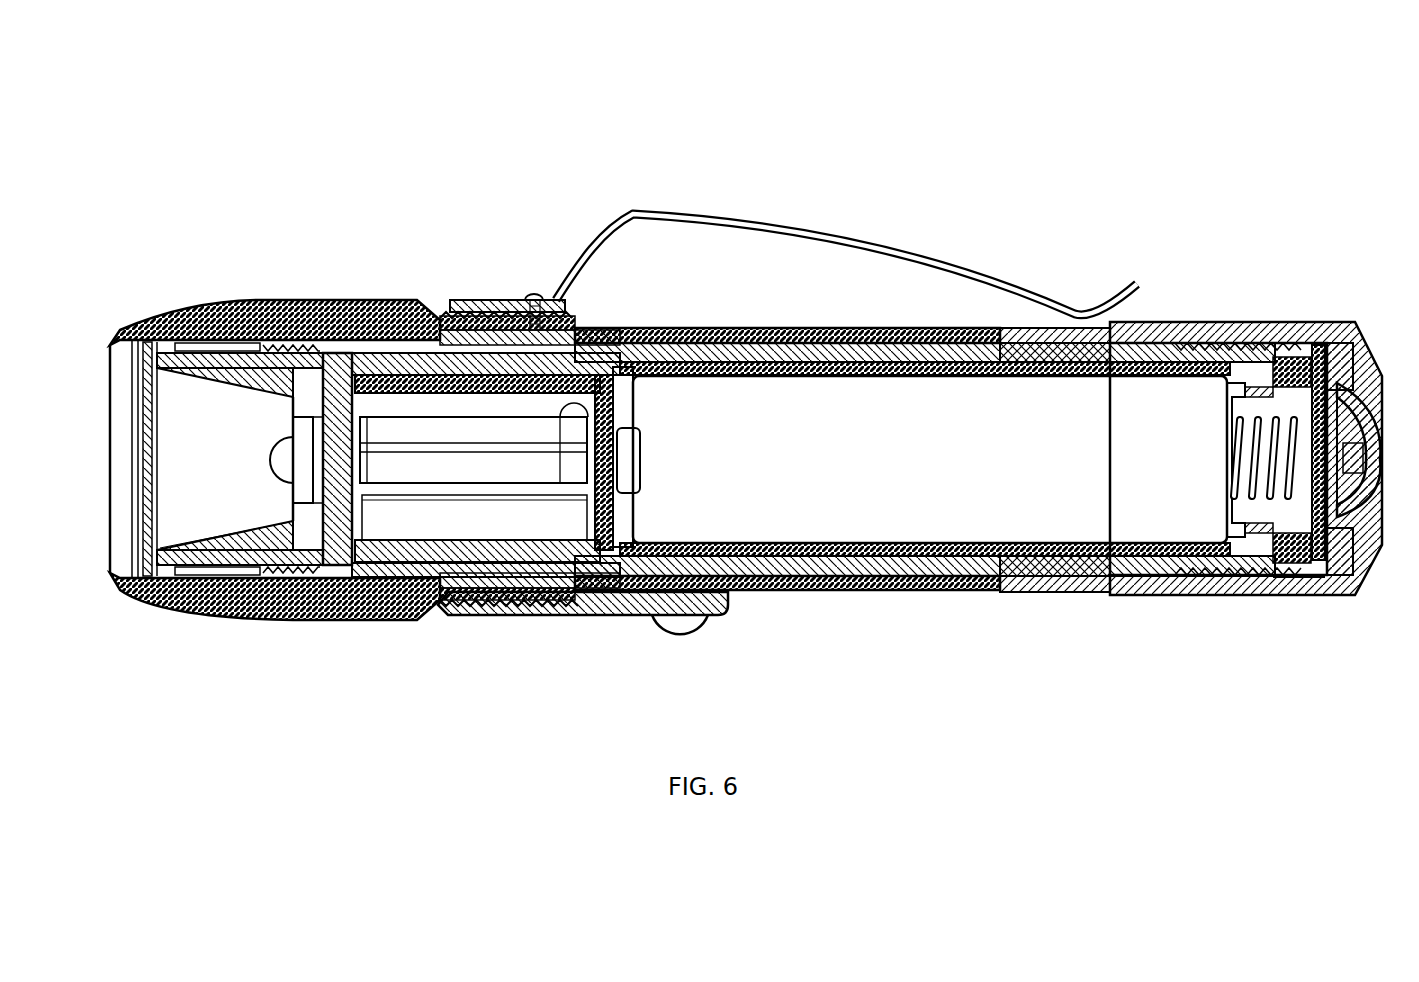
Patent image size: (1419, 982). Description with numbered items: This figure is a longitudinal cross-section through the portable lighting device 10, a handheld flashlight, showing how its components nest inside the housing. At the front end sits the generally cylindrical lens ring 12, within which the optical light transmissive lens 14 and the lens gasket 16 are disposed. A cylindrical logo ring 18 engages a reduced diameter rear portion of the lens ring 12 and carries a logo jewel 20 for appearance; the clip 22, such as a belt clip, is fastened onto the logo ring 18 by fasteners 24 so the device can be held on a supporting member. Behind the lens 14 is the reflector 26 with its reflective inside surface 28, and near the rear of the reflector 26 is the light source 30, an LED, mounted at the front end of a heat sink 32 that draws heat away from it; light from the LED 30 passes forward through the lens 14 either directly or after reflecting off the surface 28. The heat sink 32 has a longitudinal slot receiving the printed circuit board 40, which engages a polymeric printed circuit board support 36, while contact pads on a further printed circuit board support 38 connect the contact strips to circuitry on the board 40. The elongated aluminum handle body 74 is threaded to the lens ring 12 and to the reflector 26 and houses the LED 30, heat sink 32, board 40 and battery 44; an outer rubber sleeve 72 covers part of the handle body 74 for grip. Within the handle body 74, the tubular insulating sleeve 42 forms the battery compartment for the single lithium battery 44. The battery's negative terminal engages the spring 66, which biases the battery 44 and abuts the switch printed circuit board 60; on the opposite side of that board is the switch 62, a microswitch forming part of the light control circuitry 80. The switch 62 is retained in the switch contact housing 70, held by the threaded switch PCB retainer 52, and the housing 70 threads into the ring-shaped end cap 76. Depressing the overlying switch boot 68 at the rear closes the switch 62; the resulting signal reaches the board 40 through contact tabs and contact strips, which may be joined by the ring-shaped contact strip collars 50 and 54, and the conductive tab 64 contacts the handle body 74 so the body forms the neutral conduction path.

The portable lighting device 10 is at (232, 152).
The lens ring 12 is at (196, 307).
The optical light transmissive lens 14 is at (140, 415).
The lens gasket 16 is at (136, 560).
The logo ring 18 is at (497, 617).
The logo jewel 20 is at (678, 626).
The clip 22 is at (793, 227).
The fasteners 24 is at (533, 297).
The reflector 26 is at (249, 372).
The reflective inside surface 28 is at (222, 404).
The light source 30 is at (270, 477).
The heat sink 32 is at (313, 537).
The printed circuit board support 36 is at (412, 372).
The printed circuit board support 38 is at (632, 362).
The printed circuit board 40 is at (398, 492).
The insulating sleeve 42 is at (718, 330).
The battery 44 is at (832, 517).
The first contact strip collar 50 is at (1223, 583).
The switch PCB retainer 52 is at (1287, 365).
The second contact strip collar 54 is at (1263, 562).
The switch printed circuit board 60 is at (1365, 543).
The switch 62 is at (1330, 457).
The conductive tab 64 is at (1302, 345).
The spring 66 is at (1248, 410).
The switch boot 68 is at (1372, 493).
The switch contact housing 70 is at (1312, 578).
The outer rubber sleeve 72 is at (925, 592).
The handle body 74 is at (362, 338).
The end cap 76 is at (1318, 330).
The light control circuitry 80 is at (1383, 386).